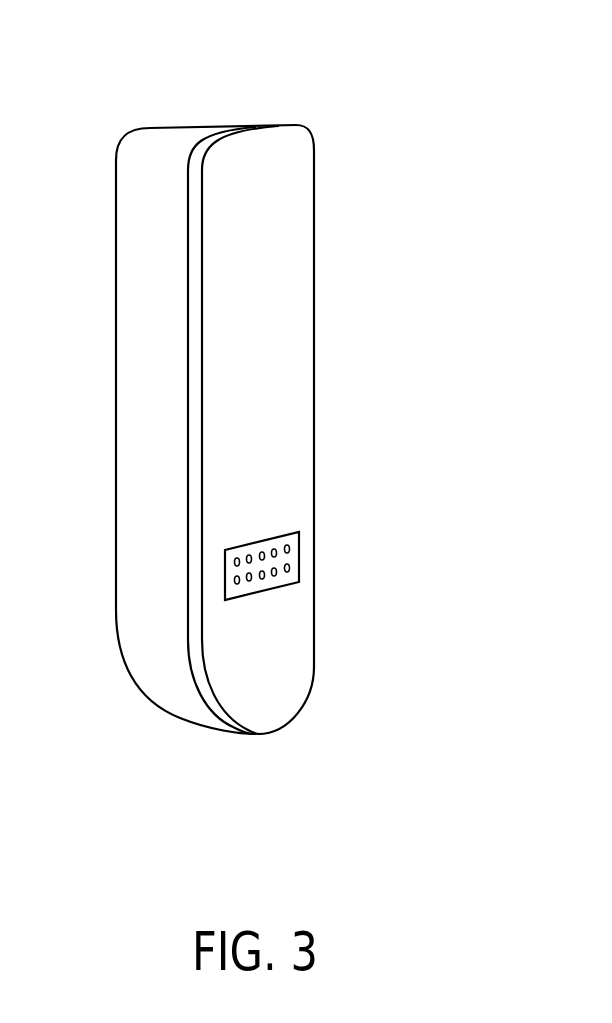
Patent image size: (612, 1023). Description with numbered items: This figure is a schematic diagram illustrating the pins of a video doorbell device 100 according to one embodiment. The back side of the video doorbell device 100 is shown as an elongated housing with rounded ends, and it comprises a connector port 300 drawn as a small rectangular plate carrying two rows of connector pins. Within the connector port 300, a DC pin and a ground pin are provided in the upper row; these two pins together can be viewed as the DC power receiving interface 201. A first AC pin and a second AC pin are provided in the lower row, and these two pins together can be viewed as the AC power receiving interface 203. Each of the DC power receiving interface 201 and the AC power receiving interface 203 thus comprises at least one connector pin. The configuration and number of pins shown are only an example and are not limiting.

The video doorbell device 100 is at (235, 122).
The connector port 300 is at (225, 567).
The DC power receiving interface 201 is at (364, 524).
The AC power receiving interface 203 is at (364, 595).